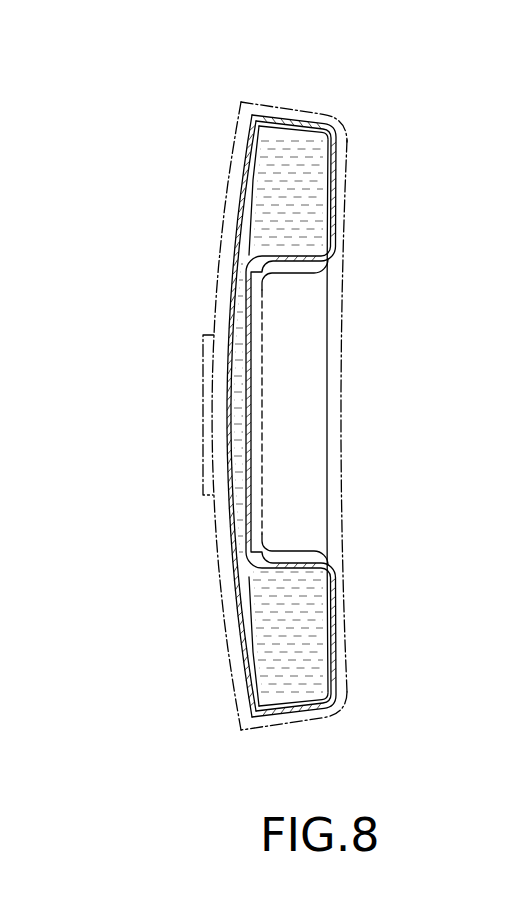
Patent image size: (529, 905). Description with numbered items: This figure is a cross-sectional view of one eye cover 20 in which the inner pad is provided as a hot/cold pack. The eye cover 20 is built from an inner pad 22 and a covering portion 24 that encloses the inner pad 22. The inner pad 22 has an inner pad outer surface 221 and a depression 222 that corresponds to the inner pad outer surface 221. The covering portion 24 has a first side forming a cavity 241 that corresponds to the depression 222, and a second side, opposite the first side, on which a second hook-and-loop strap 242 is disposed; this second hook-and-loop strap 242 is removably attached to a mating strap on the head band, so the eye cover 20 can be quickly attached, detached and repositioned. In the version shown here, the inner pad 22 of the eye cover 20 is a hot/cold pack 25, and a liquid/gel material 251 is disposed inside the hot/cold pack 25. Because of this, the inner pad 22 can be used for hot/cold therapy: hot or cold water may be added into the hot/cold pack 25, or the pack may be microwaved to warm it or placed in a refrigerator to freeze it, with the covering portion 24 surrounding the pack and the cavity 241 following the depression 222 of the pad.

The eye cover 20 is at (248, 60).
The inner pad 22 is at (240, 181).
The inner pad outer surface 221 is at (228, 401).
The depression 222 is at (243, 393).
The covering portion 24 is at (226, 238).
The cavity 241 is at (333, 477).
The second hook-and-loop strap 242 is at (208, 458).
The hot/cold pack 25 is at (303, 120).
The liquid/gel material 251 is at (303, 192).